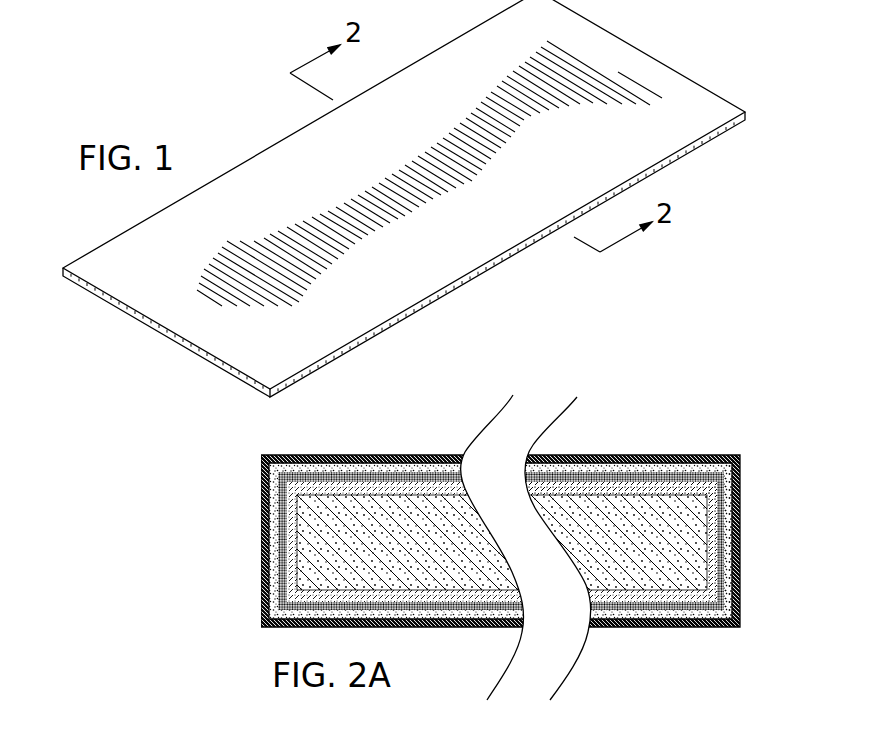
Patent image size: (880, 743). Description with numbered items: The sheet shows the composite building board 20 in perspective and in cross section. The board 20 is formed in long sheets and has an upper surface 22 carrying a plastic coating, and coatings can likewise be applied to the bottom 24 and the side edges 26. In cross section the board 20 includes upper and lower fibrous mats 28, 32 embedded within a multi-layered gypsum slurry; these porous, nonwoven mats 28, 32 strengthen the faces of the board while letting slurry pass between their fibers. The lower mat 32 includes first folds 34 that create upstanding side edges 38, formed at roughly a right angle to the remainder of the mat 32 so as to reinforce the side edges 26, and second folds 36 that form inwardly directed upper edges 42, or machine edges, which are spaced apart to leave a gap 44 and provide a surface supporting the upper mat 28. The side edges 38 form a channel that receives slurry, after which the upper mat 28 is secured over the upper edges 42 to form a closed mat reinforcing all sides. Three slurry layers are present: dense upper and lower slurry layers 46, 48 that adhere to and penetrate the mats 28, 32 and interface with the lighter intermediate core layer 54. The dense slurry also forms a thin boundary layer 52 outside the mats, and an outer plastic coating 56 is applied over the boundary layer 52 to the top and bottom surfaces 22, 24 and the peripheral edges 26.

In FIG. 1, the composite building board 20 is at (708, 50).
In FIG. 1, the upper surface 22 is at (243, 212).
In FIG. 1, the bottom 24 is at (420, 306).
In FIG. 1, the side edges 26 is at (163, 337).
In FIG. 2A, the upper fibrous mat 28 is at (613, 455).
In FIG. 2A, the lower fibrous mat 32 is at (647, 627).
In FIG. 2A, the first folds 34 is at (261, 613).
In FIG. 2A, the second folds 36 is at (261, 480).
In FIG. 2A, the upstanding side edges 38 is at (261, 550).
In FIG. 2A, the inwardly directed upper edges 42 is at (350, 455).
In FIG. 2A, the gap 44 is at (567, 455).
In FIG. 2A, the upper slurry layer 46 is at (740, 492).
In FIG. 2A, the lower slurry layer 48 is at (740, 585).
In FIG. 2A, the boundary layer 52 is at (660, 455).
In FIG. 2A, the intermediate core layer 54 is at (502, 542).
In FIG. 2A, the outer plastic coating 56 is at (417, 455).